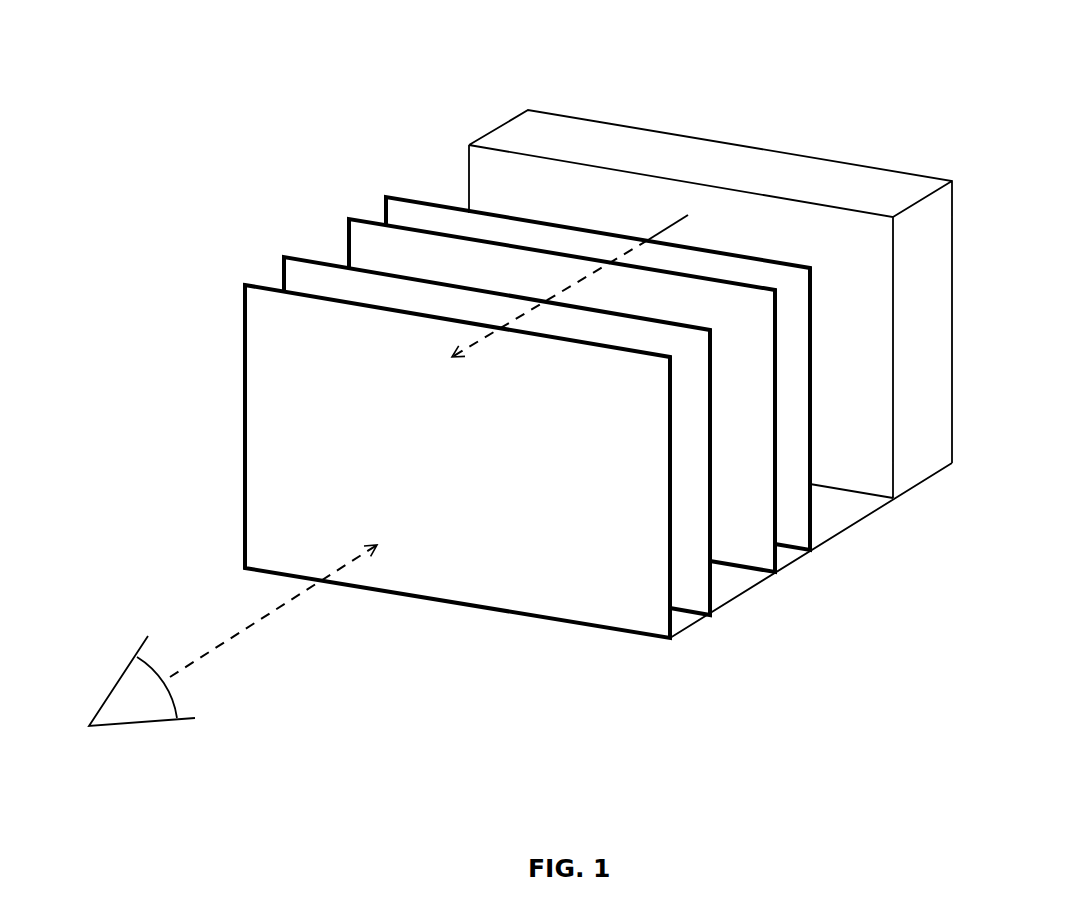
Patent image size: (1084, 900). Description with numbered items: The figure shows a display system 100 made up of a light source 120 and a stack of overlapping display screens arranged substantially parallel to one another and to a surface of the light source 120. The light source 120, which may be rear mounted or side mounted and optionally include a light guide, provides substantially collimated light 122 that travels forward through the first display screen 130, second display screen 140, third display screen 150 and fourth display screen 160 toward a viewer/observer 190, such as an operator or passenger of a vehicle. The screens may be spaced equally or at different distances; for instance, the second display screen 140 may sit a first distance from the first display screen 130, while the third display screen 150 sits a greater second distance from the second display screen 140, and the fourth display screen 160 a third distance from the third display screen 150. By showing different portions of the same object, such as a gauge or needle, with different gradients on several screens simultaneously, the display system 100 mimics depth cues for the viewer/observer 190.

The display system 100 is at (305, 37).
The light source 120 is at (882, 180).
The substantially collimated light 122 is at (658, 228).
The first display screen 130 is at (260, 337).
The second display screen 140 is at (293, 277).
The third display screen 150 is at (370, 232).
The fourth display screen 160 is at (438, 225).
The viewer/observer 190 is at (125, 668).